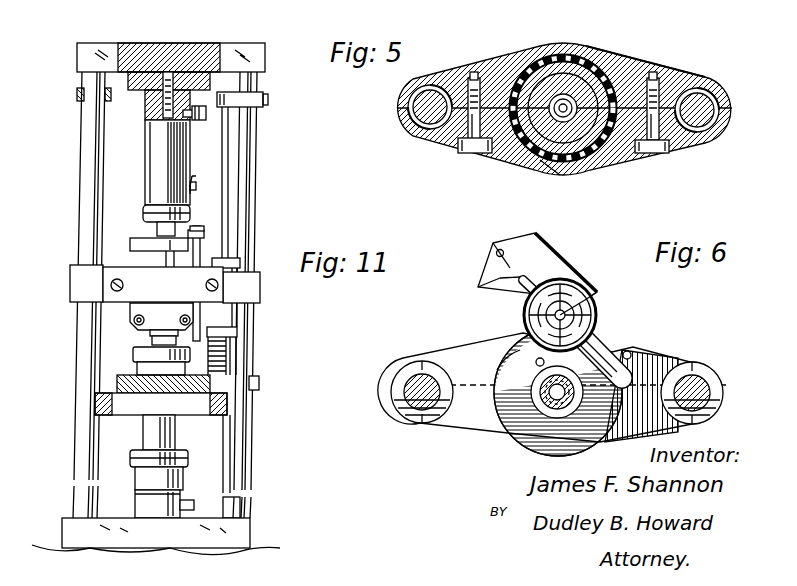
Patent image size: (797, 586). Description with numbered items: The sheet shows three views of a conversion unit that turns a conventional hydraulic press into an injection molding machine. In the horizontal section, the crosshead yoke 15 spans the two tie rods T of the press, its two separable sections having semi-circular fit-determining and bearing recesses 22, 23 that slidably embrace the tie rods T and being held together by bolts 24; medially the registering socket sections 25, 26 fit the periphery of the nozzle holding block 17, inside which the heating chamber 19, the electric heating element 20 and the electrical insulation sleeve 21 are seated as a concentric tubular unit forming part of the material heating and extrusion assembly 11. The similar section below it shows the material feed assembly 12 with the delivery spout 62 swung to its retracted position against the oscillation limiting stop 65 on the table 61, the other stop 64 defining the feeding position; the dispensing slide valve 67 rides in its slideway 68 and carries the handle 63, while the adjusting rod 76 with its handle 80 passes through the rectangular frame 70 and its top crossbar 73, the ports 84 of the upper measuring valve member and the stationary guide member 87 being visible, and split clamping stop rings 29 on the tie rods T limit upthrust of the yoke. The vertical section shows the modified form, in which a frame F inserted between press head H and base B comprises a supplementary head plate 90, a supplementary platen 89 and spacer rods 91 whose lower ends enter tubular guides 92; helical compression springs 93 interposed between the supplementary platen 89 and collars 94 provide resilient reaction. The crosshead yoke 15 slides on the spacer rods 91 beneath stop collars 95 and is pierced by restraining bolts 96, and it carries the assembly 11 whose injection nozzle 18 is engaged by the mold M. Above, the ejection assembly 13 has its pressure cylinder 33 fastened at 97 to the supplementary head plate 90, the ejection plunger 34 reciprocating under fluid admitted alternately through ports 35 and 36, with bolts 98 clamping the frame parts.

In FIG. 11, the head H is at (88, 56).
In FIG. 11, the tie rods T is at (82, 190).
In FIG. 5, the tie rods T is at (398, 98).
In FIG. 6, the tie rods T is at (398, 404).
In FIG. 11, the clamp bolts 98 is at (76, 97).
In FIG. 11, the fastening 97 is at (168, 72).
In FIG. 11, the supplementary head plate 90 is at (128, 90).
In FIG. 11, the pressure cylinder 33 is at (116, 162).
In FIG. 11, the port 36 is at (178, 174).
In FIG. 11, the port 35 is at (192, 118).
In FIG. 11, the ejection plunger 34 is at (198, 226).
In FIG. 11, the ejection assembly 13 is at (143, 192).
In FIG. 11, the material heating and extrusion assembly 11 is at (158, 256).
In FIG. 11, the spacer rods 91 is at (222, 192).
In FIG. 11, the restraining bolts 96 is at (205, 240).
In FIG. 11, the stop collars 95 is at (226, 263).
In FIG. 11, the crosshead yoke 15 is at (150, 300).
In FIG. 5, the crosshead yoke 15 is at (509, 174).
In FIG. 6, the crosshead yoke 15 is at (664, 343).
In FIG. 11, the nozzle holding block 17 is at (160, 305).
In FIG. 11, the injection nozzle 18 is at (182, 292).
In FIG. 11, the collars 94 is at (222, 330).
In FIG. 11, the helical compression springs 93 is at (223, 338).
In FIG. 11, the tubular guides 92 is at (226, 355).
In FIG. 11, the supplementary platen 89 is at (266, 383).
In FIG. 11, the mold M is at (130, 358).
In FIG. 11, the frame plate F is at (128, 405).
In FIG. 11, the material feed assembly 12 is at (132, 470).
In FIG. 11, the base B is at (236, 538).
In FIG. 5, the fit-determining and bearing recess 22 is at (416, 90).
In FIG. 5, the fit-determining and bearing recess 23 is at (402, 118).
In FIG. 5, the bolts 24 is at (468, 155).
In FIG. 5, the electric heating element 20 is at (563, 176).
In FIG. 5, the electrical insulation sleeve 21 is at (545, 50).
In FIG. 5, the socket section 25 is at (570, 42).
In FIG. 5, the heating chamber 19 is at (600, 48).
In FIG. 6, the heating chamber 19 is at (545, 412).
In FIG. 5, the socket section 26 is at (540, 165).
In FIG. 6, the dispensing slide valve 67 is at (510, 238).
In FIG. 6, the handle 63 is at (496, 256).
In FIG. 6, the slideway 68 is at (488, 281).
In FIG. 6, the handle 80 is at (520, 293).
In FIG. 6, the ports 84 is at (530, 318).
In FIG. 6, the stationary guide member 87 is at (542, 244).
In FIG. 6, the top crossbar 73 is at (606, 295).
In FIG. 6, the oscillation limiting stop 65 is at (633, 345).
In FIG. 6, the delivery spout 62 is at (630, 345).
In FIG. 6, the split clamping stop rings 29 is at (405, 368).
In FIG. 6, the adjusting rod 76 is at (508, 358).
In FIG. 6, the rectangular frame 70 is at (536, 364).
In FIG. 6, the oscillation limiting stop 64 is at (530, 392).
In FIG. 6, the table 61 is at (500, 445).